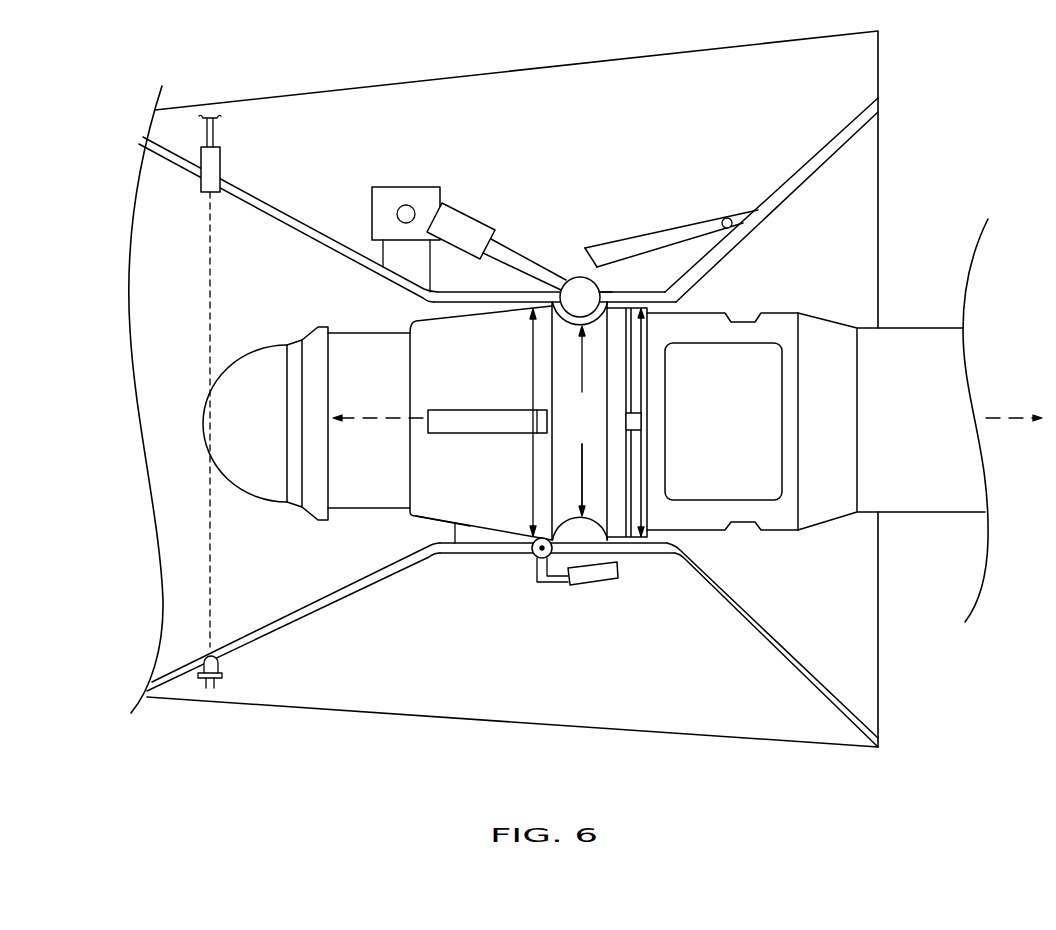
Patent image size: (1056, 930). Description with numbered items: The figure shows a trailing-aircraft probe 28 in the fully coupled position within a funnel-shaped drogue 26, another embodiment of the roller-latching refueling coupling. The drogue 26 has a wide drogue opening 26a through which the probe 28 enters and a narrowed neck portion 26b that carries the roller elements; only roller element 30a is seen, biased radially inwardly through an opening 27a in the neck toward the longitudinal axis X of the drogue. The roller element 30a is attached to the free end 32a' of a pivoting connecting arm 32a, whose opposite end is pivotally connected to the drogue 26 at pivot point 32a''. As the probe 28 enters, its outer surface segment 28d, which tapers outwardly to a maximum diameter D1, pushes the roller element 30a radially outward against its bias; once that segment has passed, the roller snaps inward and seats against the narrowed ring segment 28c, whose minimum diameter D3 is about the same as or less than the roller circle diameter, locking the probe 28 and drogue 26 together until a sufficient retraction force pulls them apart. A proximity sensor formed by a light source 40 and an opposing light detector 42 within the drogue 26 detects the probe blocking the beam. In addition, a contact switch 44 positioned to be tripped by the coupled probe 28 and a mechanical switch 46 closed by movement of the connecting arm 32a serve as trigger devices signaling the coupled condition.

The drogue 26 is at (598, 61).
The drogue opening 26a is at (848, 182).
The neck portion 26b is at (667, 297).
The opening 27a is at (614, 278).
The probe 28 is at (430, 377).
The narrowed ring segment 28c is at (598, 431).
The probe outer surface segment 28d is at (421, 536).
The roller element 30a is at (572, 279).
The connecting arm 32a is at (671, 224).
The free end of arm 32a' is at (605, 234).
The pivot point 32a'' is at (722, 195).
The light source 40 is at (234, 680).
The light detector 42 is at (207, 98).
The contact switch 44 is at (587, 577).
The mechanical switch 46 is at (470, 216).
The maximum diameter D1 is at (532, 357).
The minimum diameter D3 is at (580, 465).
The longitudinal axis X is at (362, 418).